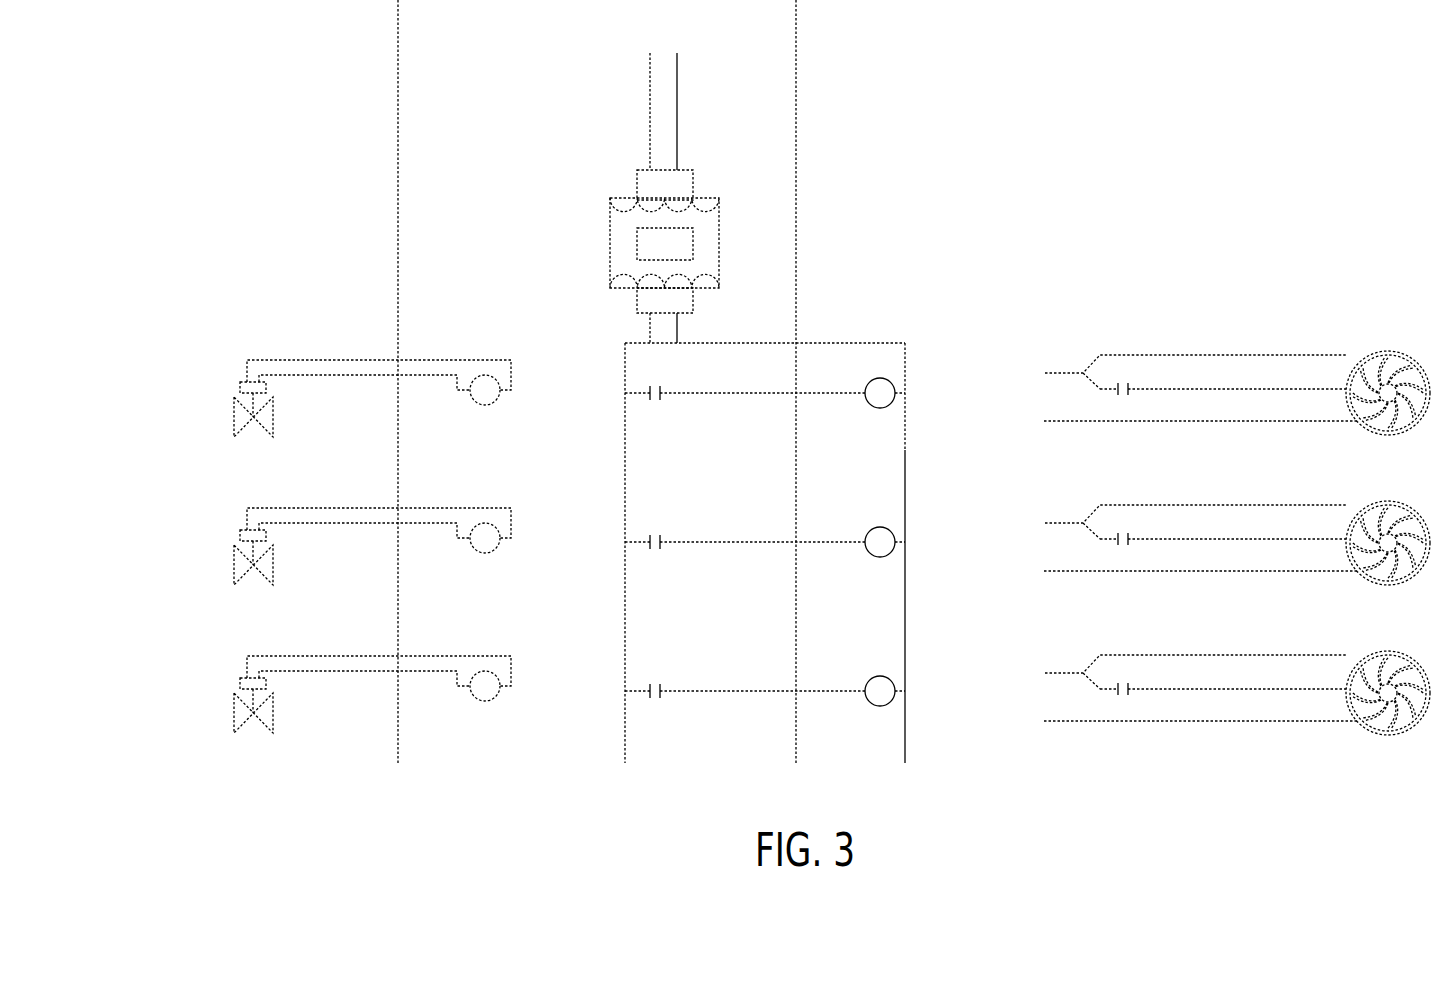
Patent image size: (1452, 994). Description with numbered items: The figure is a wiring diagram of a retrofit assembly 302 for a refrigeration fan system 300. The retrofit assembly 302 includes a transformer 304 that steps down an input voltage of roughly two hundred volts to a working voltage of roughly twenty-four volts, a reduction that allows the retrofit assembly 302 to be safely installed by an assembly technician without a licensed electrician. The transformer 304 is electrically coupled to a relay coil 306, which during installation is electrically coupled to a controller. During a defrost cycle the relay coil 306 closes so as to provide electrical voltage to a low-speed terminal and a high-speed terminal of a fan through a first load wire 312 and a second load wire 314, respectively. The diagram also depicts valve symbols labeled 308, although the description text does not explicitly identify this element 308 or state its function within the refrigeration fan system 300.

The refrigeration fan system 300 is at (1188, 141).
The retrofit assembly 302 is at (679, 133).
The transformer 304 is at (713, 242).
The relay coil 306 is at (884, 379).
The valve 308 is at (232, 417).
The first load wire 312 is at (1200, 355).
The second load wire 314 is at (1233, 389).